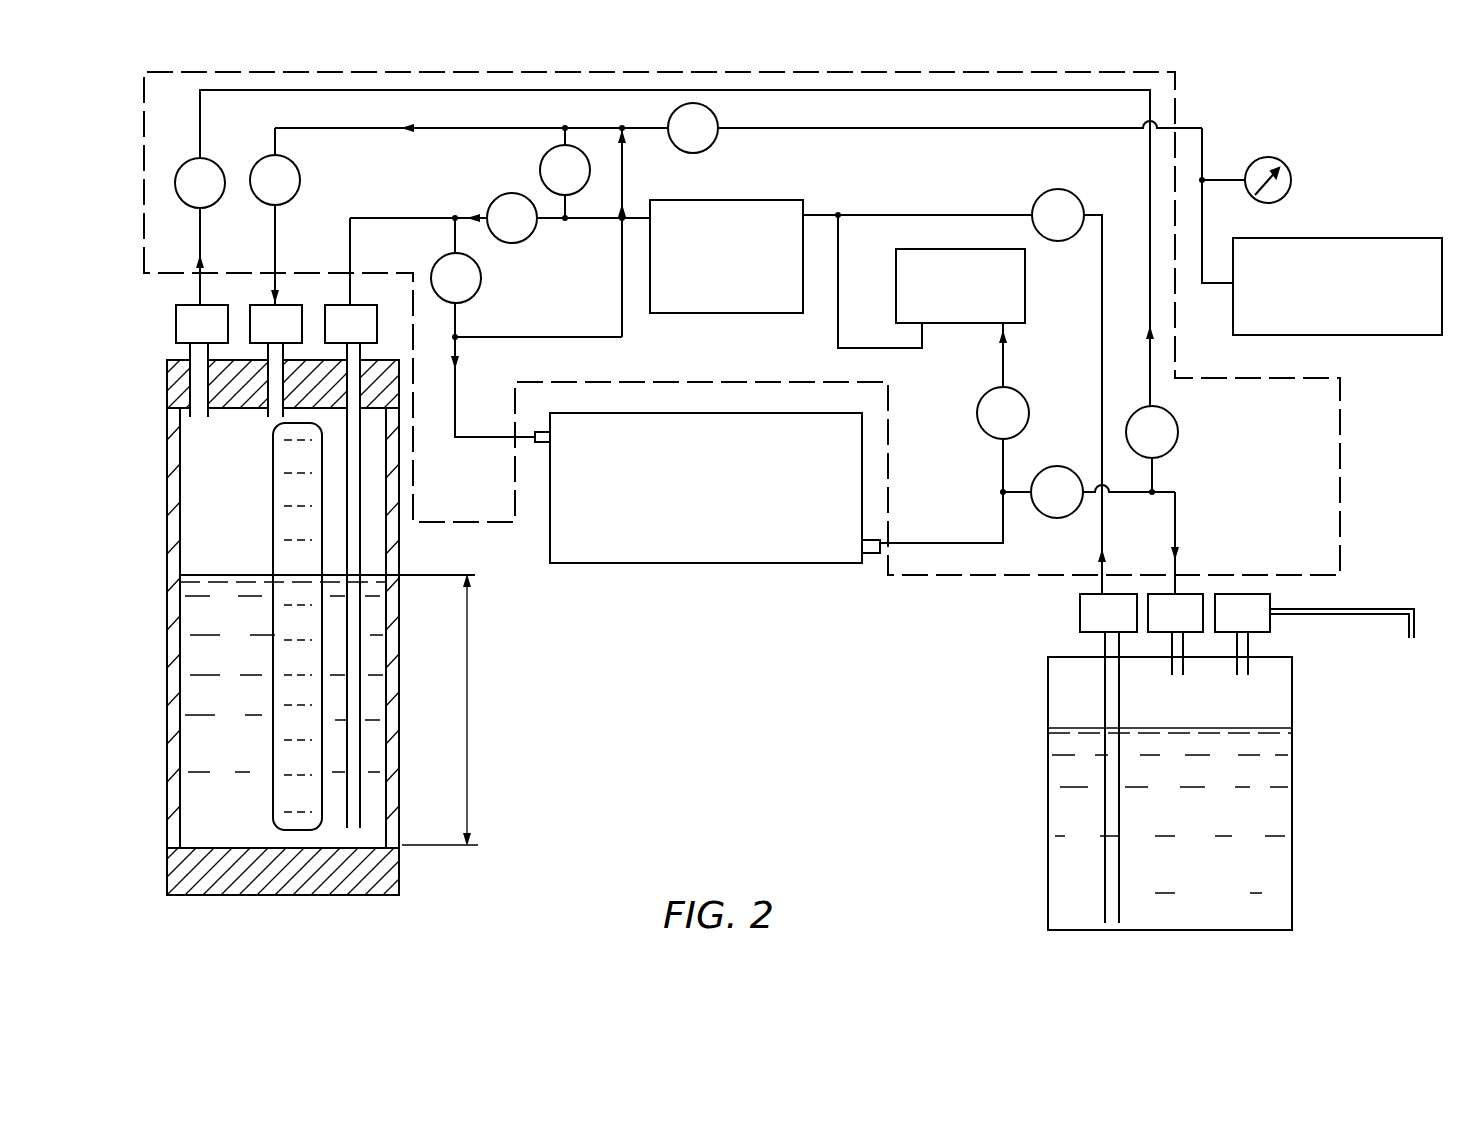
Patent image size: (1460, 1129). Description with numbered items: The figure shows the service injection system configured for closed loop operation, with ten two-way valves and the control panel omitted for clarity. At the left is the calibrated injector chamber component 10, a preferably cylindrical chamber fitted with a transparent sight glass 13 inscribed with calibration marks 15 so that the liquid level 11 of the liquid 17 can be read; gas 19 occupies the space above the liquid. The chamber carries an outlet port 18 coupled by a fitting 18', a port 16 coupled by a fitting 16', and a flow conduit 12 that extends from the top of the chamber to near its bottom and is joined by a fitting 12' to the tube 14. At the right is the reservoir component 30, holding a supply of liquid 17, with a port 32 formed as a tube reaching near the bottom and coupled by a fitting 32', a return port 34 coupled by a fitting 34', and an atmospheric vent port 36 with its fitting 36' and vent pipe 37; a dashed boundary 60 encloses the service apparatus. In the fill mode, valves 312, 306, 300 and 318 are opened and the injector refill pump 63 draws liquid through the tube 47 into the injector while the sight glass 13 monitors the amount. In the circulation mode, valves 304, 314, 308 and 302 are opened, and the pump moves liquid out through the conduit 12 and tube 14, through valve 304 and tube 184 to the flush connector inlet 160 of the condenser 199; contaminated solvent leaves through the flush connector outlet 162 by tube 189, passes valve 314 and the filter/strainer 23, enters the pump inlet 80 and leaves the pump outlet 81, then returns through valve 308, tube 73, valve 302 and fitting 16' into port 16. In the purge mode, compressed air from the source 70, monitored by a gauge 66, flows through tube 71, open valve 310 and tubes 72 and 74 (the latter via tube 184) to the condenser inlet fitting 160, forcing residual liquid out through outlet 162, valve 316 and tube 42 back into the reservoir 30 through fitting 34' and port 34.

The calibrated injector chamber component 10 is at (172, 622).
The liquid level 11 is at (468, 702).
The flow conduit 12 is at (398, 585).
The sight glass 13 is at (273, 558).
The tube 14 is at (352, 246).
The calibration marks 15 is at (288, 541).
The port 16 is at (248, 402).
The liquid 17 is at (1278, 826).
The outlet port 18 is at (160, 405).
The gas 19 is at (190, 487).
The filter/strainer 23 is at (1027, 309).
The reservoir component 30 is at (1048, 783).
The port 32 is at (1054, 777).
The port 34 is at (1165, 679).
The port 36 is at (1255, 679).
The vent pipe 37 is at (1418, 632).
The tube 42 is at (1178, 510).
The tube 47 is at (598, 222).
The enclosure boundary 60 is at (685, 381).
The injector refill pump 63 is at (782, 305).
The pressure gauge 66 is at (1292, 173).
The source of air or gas 70 is at (1365, 238).
The tube 71 is at (1203, 142).
The tube 72 is at (652, 123).
The tube 73 is at (380, 132).
The tube 74 is at (558, 339).
The pump inlet 80 is at (809, 213).
The pump outlet 81 is at (640, 213).
The flush connector inlet 160 is at (525, 430).
The flush connector outlet 162 is at (880, 562).
The tube 184 is at (482, 442).
The tube 189 is at (1005, 535).
The condenser 199 is at (612, 565).
The valve 300 is at (212, 163).
The valve 302 is at (297, 161).
The valve 304 is at (483, 279).
The valve 306 is at (505, 192).
The valve 308 is at (543, 157).
The valve 310 is at (713, 147).
The valve 312 is at (1057, 189).
The valve 314 is at (1020, 392).
The valve 316 is at (1056, 466).
The valve 318 is at (1181, 434).
The fitting 18' is at (202, 324).
The fitting 16' is at (276, 324).
The fitting 12' is at (351, 324).
The fitting 32' is at (1108, 613).
The fitting 34' is at (1175, 613).
The connector for tube 36 36' is at (1242, 613).